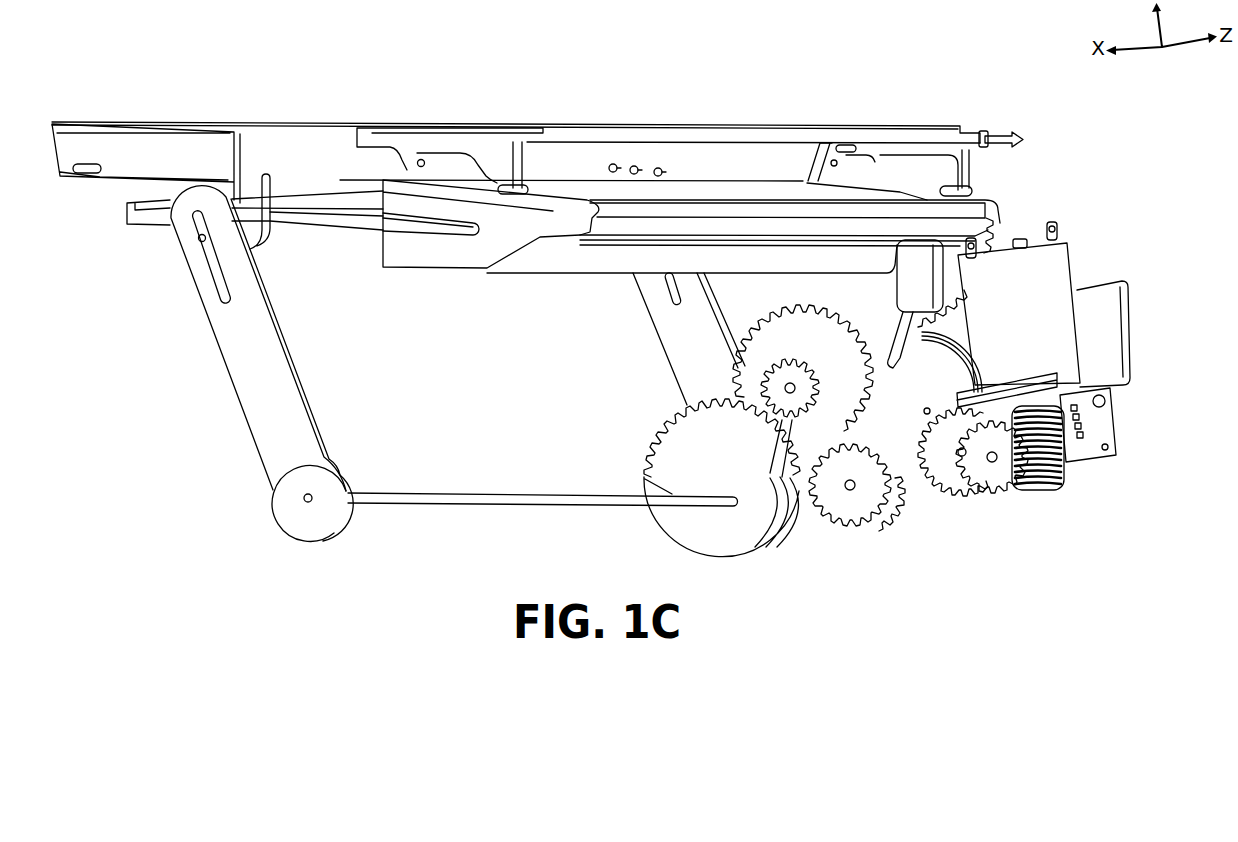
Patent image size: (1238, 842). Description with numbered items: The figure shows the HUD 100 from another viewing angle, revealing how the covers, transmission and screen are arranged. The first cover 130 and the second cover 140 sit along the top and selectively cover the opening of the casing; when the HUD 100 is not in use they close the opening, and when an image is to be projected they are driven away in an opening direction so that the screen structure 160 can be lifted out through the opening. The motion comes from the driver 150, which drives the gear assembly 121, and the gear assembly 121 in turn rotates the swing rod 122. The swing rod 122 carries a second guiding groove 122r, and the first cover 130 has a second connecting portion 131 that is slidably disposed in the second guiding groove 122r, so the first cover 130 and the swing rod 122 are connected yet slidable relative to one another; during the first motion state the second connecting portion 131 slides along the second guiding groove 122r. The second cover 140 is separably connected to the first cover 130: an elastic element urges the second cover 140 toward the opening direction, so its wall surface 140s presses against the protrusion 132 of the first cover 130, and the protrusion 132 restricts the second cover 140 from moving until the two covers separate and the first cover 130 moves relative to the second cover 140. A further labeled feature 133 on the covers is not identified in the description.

The HUD 100 is at (358, 48).
The gear assembly 121 is at (873, 548).
The swing rod 122 is at (254, 368).
The second guiding groove 122r is at (221, 292).
The first cover 130 is at (172, 122).
The second connecting portion 131 is at (199, 237).
The protrusion 132 is at (828, 148).
The positioning pins 133 is at (604, 170).
The second cover 140 is at (673, 124).
The wall surface 140s is at (838, 150).
The driver 150 is at (1053, 264).
The screen structure 160 is at (398, 245).